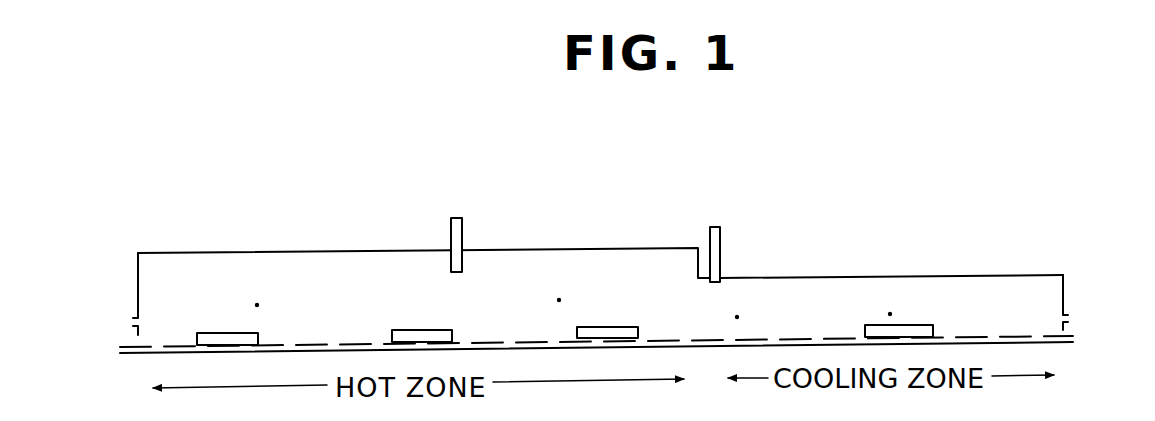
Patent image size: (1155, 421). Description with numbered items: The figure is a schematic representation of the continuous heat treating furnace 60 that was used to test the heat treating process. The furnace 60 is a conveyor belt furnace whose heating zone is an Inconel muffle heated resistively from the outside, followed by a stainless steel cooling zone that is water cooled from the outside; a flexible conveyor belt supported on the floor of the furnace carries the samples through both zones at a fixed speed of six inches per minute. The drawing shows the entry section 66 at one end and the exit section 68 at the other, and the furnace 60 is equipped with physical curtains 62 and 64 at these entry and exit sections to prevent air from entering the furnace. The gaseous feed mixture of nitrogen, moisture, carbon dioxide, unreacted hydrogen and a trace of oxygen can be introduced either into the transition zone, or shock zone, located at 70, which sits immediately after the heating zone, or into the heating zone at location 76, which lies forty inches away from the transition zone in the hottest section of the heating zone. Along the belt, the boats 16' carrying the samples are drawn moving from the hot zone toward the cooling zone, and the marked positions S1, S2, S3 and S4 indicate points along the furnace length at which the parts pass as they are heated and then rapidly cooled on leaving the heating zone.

The continuous heat treating furnace 60 is at (366, 244).
The physical curtain 62 is at (134, 327).
The physical curtain 64 is at (1066, 323).
The entry section 66 is at (138, 283).
The exit section 68 is at (1066, 300).
The transition zone (shock zone) feeding area 70 is at (720, 242).
The heating zone feeding area 76 is at (462, 232).
The boats carrying substrates 16' is at (565, 325).
The sensor position 1 S1 is at (257, 289).
The sensor position 2 S2 is at (559, 286).
The sensor position 3 S3 is at (739, 303).
The sensor position 4 S4 is at (892, 299).